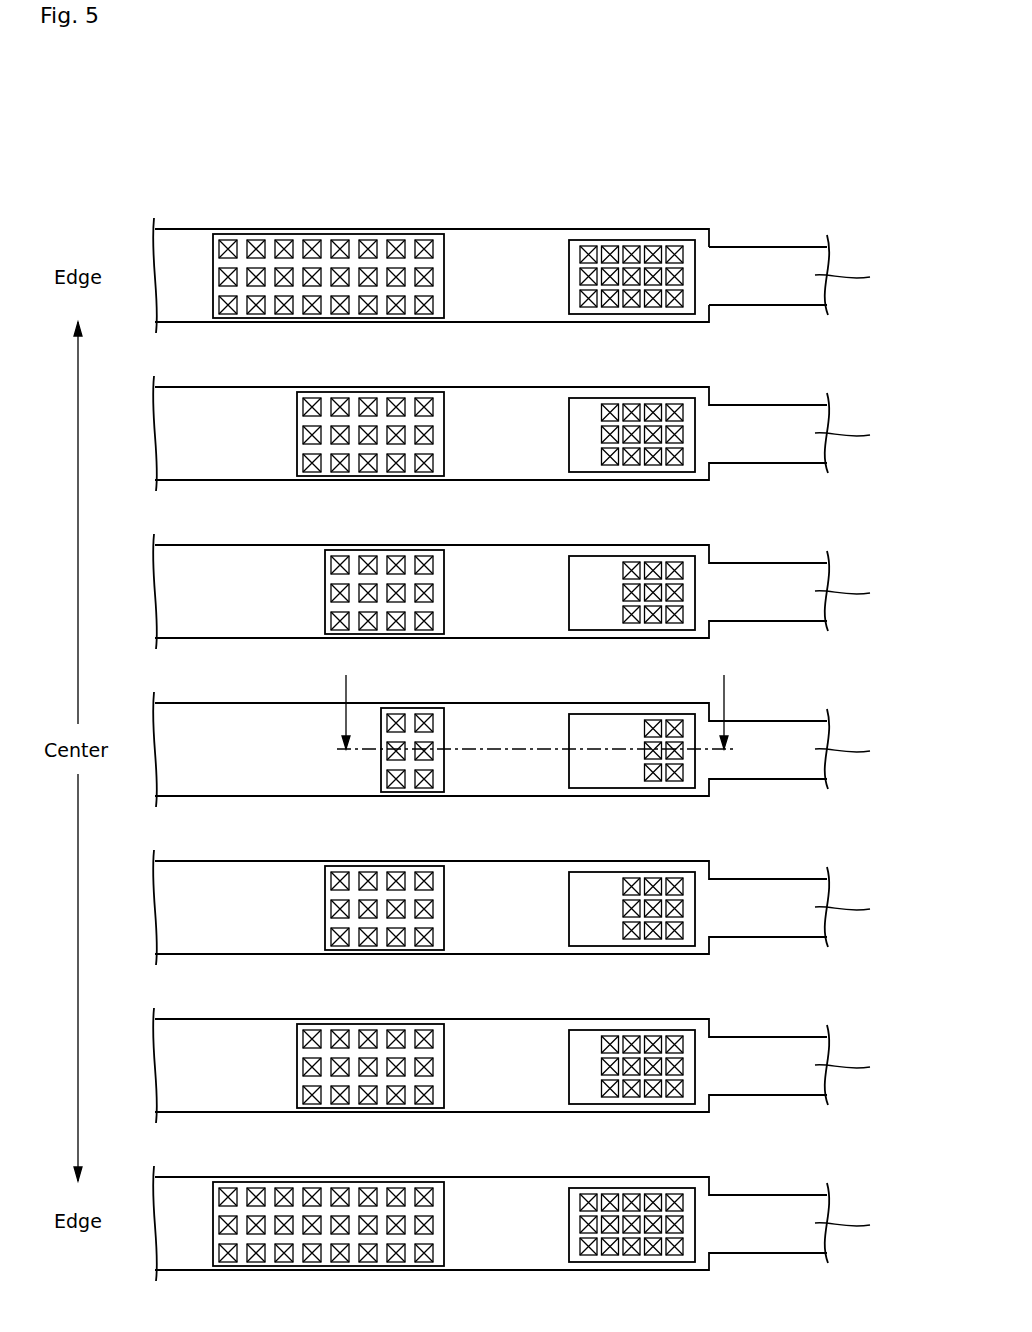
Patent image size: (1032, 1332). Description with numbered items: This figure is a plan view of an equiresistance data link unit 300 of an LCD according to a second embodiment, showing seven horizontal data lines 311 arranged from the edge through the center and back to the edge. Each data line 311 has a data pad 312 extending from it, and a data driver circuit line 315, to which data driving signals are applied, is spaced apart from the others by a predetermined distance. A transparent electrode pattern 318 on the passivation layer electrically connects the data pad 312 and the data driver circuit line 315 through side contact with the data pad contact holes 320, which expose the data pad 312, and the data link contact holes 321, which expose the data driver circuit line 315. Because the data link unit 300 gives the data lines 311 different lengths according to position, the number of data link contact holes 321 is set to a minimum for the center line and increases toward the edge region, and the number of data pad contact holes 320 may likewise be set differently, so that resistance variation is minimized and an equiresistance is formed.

The data link unit 300 is at (523, 145).
The data line 311 is at (744, 255).
The data pad 312 is at (657, 239).
The data driver circuit line 315 is at (184, 229).
The transparent electrode pattern 318 is at (478, 229).
The data pad contact hole 320 is at (582, 276).
The data link contact hole 321 is at (312, 241).